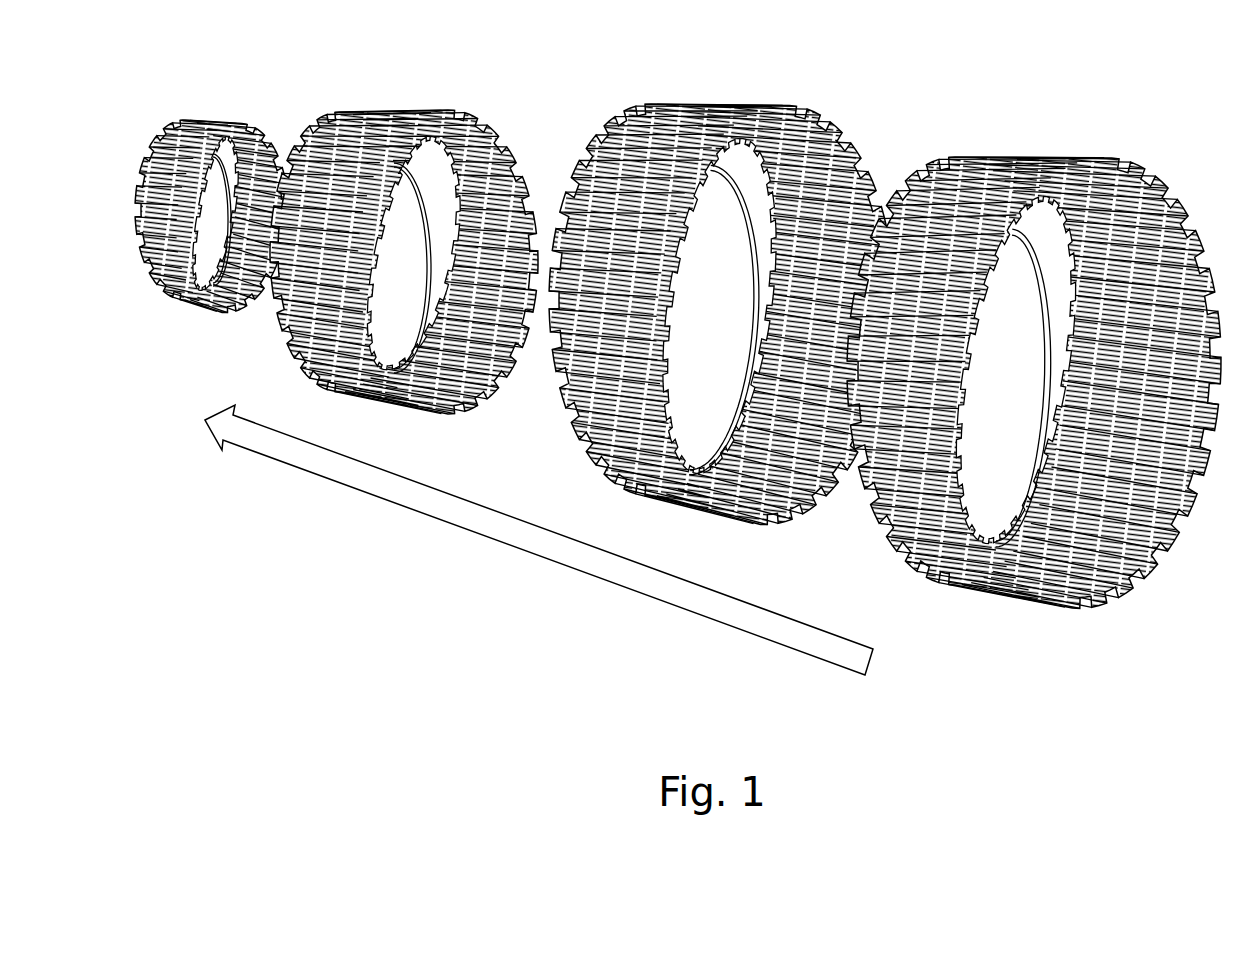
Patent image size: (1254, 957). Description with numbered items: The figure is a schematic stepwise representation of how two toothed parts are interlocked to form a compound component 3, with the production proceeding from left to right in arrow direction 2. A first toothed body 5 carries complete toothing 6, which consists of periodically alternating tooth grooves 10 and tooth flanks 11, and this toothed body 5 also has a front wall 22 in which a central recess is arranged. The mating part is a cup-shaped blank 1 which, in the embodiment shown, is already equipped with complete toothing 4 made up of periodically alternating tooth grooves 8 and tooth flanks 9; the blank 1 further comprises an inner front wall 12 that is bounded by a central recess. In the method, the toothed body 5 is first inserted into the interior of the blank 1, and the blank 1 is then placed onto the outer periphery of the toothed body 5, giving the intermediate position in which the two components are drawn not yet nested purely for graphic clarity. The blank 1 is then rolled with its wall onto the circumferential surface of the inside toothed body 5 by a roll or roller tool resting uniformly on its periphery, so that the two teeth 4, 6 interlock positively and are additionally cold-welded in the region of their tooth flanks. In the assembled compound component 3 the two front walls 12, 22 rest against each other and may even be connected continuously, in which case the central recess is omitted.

The blank 1 is at (503, 266).
The arrow direction 2 is at (813, 643).
The compound component 3 is at (143, 146).
The toothing 4 is at (850, 142).
The toothed body 5 is at (277, 128).
The toothing 6 is at (1216, 267).
The tooth grooves 8 is at (677, 128).
The tooth flanks 9 is at (701, 128).
The tooth grooves 10 is at (933, 182).
The tooth flanks 11 is at (965, 193).
The inner front wall 12 is at (746, 305).
The front wall 22 is at (1040, 368).